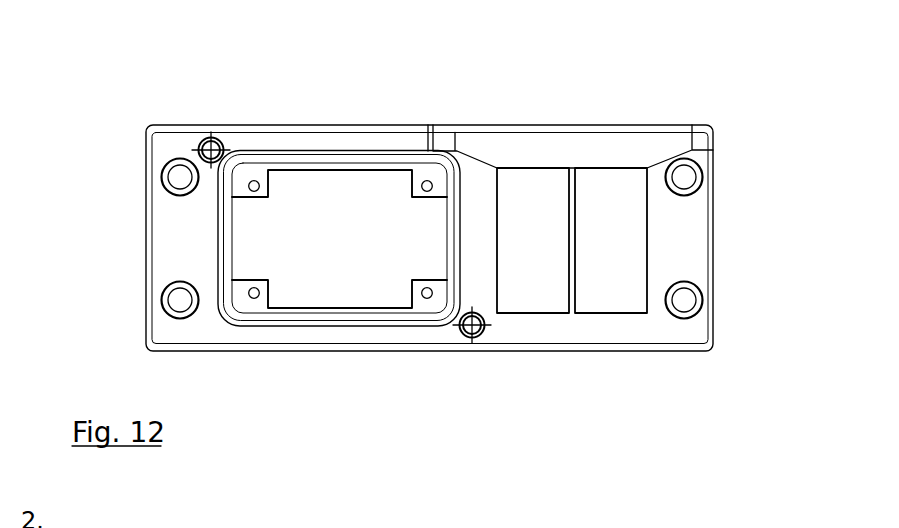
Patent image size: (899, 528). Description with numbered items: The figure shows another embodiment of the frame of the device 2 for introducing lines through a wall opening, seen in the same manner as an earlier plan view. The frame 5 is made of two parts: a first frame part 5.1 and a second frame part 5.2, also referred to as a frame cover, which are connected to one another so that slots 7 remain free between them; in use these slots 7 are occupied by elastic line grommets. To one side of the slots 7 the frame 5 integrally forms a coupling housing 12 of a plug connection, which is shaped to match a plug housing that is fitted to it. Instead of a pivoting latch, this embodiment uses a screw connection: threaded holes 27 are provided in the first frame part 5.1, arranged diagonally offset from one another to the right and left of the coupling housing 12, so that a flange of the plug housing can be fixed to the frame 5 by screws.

The device 2 is at (167, 90).
The frame 5 is at (618, 347).
The first frame part 5.1 is at (365, 340).
The second frame part 5.2 is at (557, 145).
The slots 7 is at (602, 227).
The coupling housing 12 is at (306, 322).
The threaded holes 27 is at (218, 141).